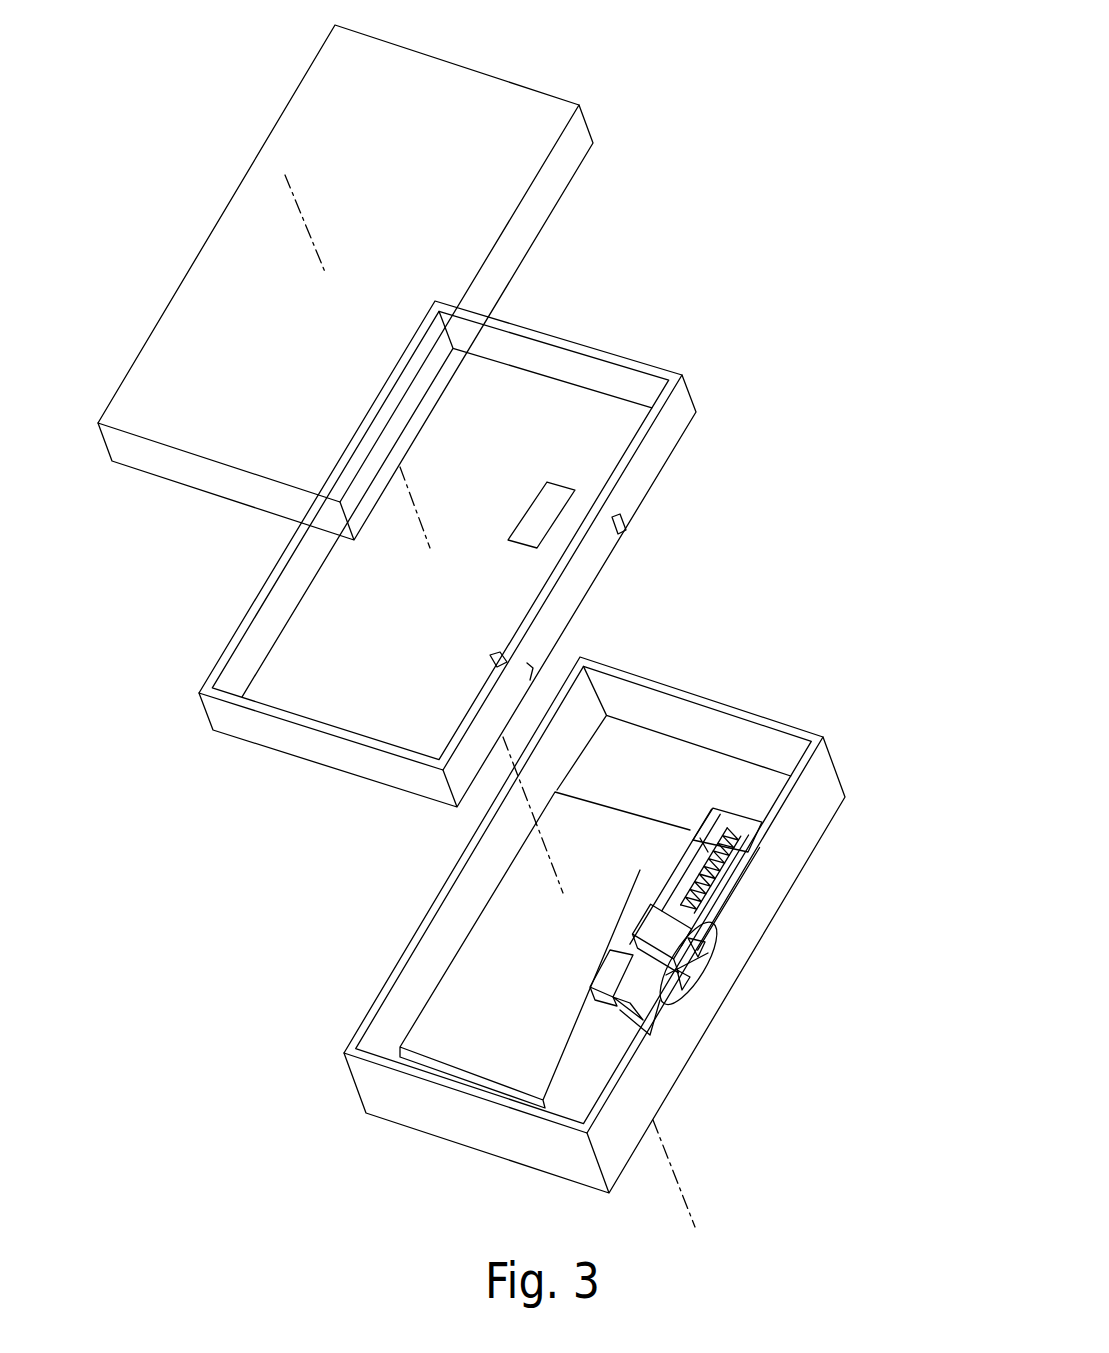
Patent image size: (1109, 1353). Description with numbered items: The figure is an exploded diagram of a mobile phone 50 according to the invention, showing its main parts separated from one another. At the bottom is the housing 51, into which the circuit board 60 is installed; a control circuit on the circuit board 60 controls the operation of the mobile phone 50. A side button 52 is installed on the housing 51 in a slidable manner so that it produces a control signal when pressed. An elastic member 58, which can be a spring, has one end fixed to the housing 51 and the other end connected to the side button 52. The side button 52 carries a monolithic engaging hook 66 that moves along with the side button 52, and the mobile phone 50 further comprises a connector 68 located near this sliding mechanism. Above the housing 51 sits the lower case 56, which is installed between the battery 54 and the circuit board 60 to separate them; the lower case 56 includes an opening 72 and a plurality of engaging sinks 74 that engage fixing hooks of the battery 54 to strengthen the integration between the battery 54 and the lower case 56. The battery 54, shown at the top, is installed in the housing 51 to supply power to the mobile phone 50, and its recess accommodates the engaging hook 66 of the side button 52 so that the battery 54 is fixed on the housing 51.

The mobile phone 50 is at (746, 82).
The housing 51 is at (787, 747).
The side button 52 is at (707, 950).
The battery 54 is at (457, 75).
The lower case 56 is at (635, 378).
The elastic member 58 is at (723, 828).
The circuit board 60 is at (500, 912).
The engaging hook 66 is at (655, 1000).
The connector 68 is at (647, 1038).
The opening 72 is at (538, 482).
The engaging sinks 74 is at (626, 532).